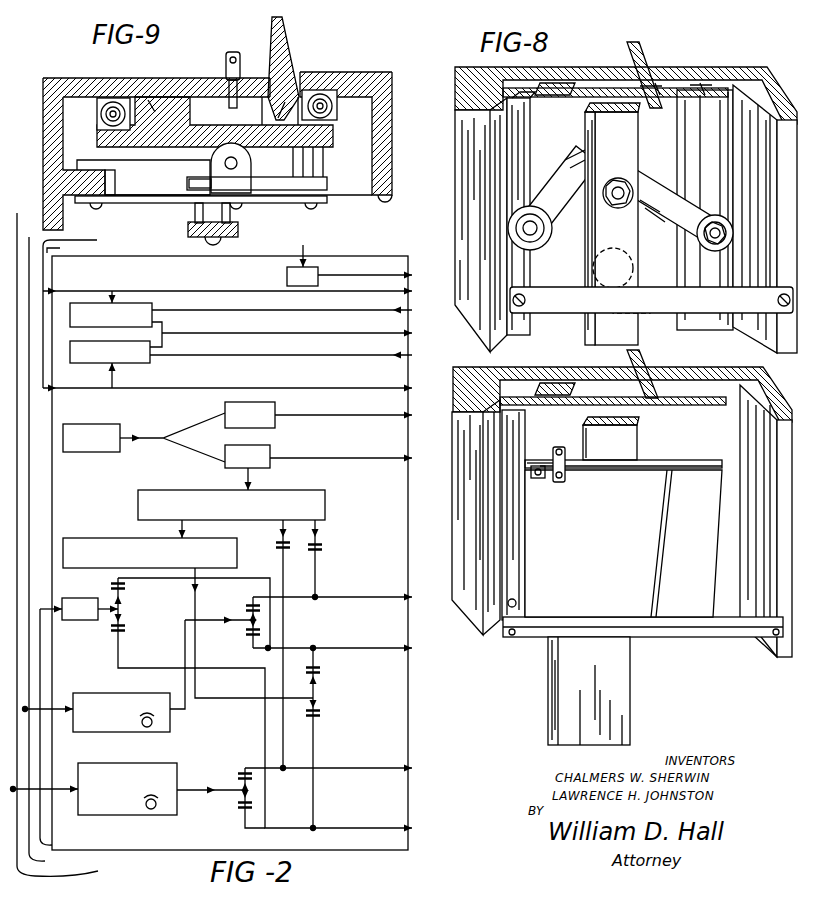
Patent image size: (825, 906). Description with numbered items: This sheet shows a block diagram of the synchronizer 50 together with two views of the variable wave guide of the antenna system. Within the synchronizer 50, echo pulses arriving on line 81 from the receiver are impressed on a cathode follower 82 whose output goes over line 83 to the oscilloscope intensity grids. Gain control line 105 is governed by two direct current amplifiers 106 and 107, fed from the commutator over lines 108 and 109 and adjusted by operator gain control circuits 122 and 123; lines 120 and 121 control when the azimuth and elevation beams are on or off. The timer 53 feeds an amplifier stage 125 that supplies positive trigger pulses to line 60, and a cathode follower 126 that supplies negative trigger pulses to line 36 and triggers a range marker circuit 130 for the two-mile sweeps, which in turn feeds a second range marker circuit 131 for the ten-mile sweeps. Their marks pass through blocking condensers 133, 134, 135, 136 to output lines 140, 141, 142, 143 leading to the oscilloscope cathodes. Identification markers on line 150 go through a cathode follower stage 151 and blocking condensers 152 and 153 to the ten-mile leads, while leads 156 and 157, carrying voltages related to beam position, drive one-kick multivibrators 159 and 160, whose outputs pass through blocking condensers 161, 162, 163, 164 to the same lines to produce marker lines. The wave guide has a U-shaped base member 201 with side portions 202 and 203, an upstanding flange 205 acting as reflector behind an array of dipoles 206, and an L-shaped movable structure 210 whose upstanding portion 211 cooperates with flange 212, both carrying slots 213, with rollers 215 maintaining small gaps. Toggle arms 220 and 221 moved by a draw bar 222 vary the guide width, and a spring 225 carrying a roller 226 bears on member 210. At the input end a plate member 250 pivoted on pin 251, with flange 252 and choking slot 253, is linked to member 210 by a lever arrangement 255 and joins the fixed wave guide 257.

In FIG. 2, the synchronizer 50 is at (408, 714).
In FIG. 2, the timer 53 is at (92, 424).
In FIG. 2, the line 60 is at (361, 424).
In FIG. 2, the line 36 is at (330, 464).
In FIG. 2, the line 81 is at (306, 247).
In FIG. 2, the cathode follower 82 is at (320, 272).
In FIG. 2, the line 83 is at (380, 275).
In FIG. 2, the gain control line 105 is at (295, 328).
In FIG. 2, the direct current amplifier 106 is at (153, 306).
In FIG. 2, the direct current amplifier 107 is at (152, 360).
In FIG. 2, the line 108 is at (68, 251).
In FIG. 2, the line 109 is at (85, 308).
In FIG. 2, the line 120 is at (326, 292).
In FIG. 2, the line 121 is at (296, 394).
In FIG. 2, the gain control circuit 122 is at (260, 309).
In FIG. 2, the gain control circuit 123 is at (245, 349).
In FIG. 2, the amplifier stage 125 is at (225, 408).
In FIG. 2, the cathode follower 126 is at (225, 465).
In FIG. 2, the range marker circuit 130 is at (138, 494).
In FIG. 2, the second range marker circuit 131 is at (108, 538).
In FIG. 2, the blocking condenser 133 is at (326, 544).
In FIG. 2, the blocking condenser 134 is at (277, 548).
In FIG. 2, the blocking condenser 135 is at (318, 674).
In FIG. 2, the blocking condenser 136 is at (318, 712).
In FIG. 2, the output line 140 is at (374, 599).
In FIG. 2, the output line 141 is at (398, 650).
In FIG. 2, the output line 142 is at (383, 771).
In FIG. 2, the output line 143 is at (383, 830).
In FIG. 2, the line 150 is at (62, 729).
In FIG. 2, the cathode follower stage 151 is at (80, 598).
In FIG. 2, the blocking condenser 152 is at (122, 592).
In FIG. 2, the blocking condenser 153 is at (122, 626).
In FIG. 2, the lead 156 is at (53, 555).
In FIG. 2, the lead 157 is at (74, 544).
In FIG. 2, the one-kick multivibrator 159 is at (172, 722).
In FIG. 2, the one-kick multivibrator 160 is at (177, 767).
In FIG. 2, the blocking condenser 161 is at (249, 606).
In FIG. 2, the blocking condenser 162 is at (248, 636).
In FIG. 2, the blocking condenser 163 is at (241, 766).
In FIG. 2, the blocking condenser 164 is at (240, 808).
In FIG. 9, the base member 201 is at (146, 86).
In FIG. 8, the base member 201 is at (588, 66).
In FIG. 9, the side portion 202 is at (43, 144).
In FIG. 8, the side portion 202 is at (457, 188).
In FIG. 9, the side portion 203 is at (372, 148).
In FIG. 8, the side portion 203 is at (775, 100).
In FIG. 9, the upstanding flange 205 is at (290, 40).
In FIG. 8, the upstanding flange 205 is at (646, 51).
In FIG. 9, the dipole 206 is at (233, 52).
In FIG. 9, the movable structure 210 is at (185, 148).
In FIG. 8, the movable structure 210 is at (614, 259).
In FIG. 9, the upstanding portion 211 is at (187, 110).
In FIG. 8, the upstanding portion 211 is at (566, 90).
In FIG. 9, the flange 212 is at (262, 105).
In FIG. 8, the flange 212 is at (695, 90).
In FIG. 9, the slot 213 is at (160, 98).
In FIG. 8, the slot 213 is at (551, 97).
In FIG. 9, the roller 215 is at (98, 120).
In FIG. 9, the toggle arm 220 is at (143, 177).
In FIG. 8, the toggle arm 220 is at (549, 172).
In FIG. 9, the toggle arm 221 is at (280, 190).
In FIG. 8, the toggle arm 221 is at (691, 196).
In FIG. 9, the draw bar 222 is at (240, 230).
In FIG. 8, the draw bar 222 is at (611, 281).
In FIG. 9, the spring 225 is at (150, 203).
In FIG. 8, the spring 225 is at (648, 462).
In FIG. 9, the roller 226 is at (251, 158).
In FIG. 8, the roller 226 is at (612, 256).
In FIG. 8, the plate member 250 is at (623, 543).
In FIG. 8, the pin 251 is at (522, 601).
In FIG. 8, the flange 252 is at (585, 470).
In FIG. 8, the choking slot 253 is at (540, 480).
In FIG. 8, the lever arrangement 255 is at (561, 452).
In FIG. 8, the fixed wave guide 257 is at (633, 655).